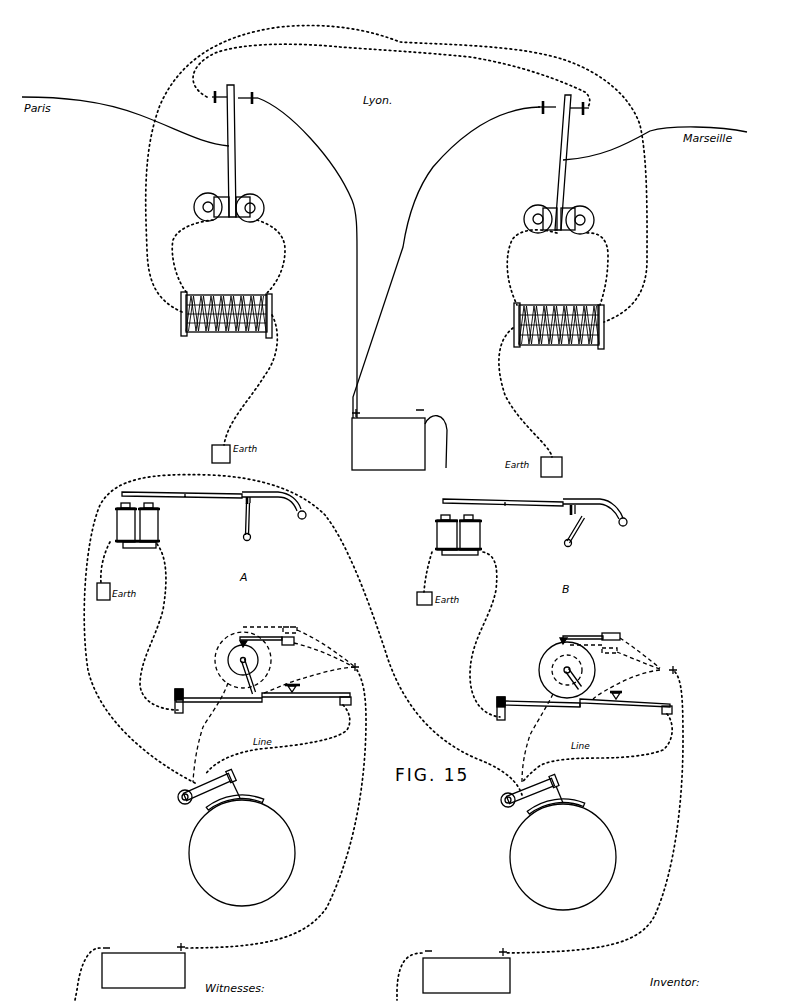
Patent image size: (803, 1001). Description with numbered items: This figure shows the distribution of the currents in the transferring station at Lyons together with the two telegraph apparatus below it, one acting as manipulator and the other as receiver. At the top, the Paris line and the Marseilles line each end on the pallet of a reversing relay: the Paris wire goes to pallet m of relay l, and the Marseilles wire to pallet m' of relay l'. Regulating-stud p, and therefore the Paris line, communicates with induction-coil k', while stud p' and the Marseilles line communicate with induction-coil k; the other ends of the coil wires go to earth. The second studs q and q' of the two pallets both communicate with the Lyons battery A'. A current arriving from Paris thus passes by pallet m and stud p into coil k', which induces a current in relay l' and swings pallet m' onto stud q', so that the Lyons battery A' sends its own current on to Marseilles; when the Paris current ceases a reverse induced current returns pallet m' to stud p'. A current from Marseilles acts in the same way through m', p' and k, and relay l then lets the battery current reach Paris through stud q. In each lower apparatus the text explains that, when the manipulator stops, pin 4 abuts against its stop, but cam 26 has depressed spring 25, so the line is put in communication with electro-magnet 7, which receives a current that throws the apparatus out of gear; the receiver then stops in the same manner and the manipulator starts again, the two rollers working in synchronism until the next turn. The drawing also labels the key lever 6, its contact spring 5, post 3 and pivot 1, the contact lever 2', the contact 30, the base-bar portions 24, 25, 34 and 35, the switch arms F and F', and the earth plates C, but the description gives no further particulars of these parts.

The regulating-stud p is at (214, 104).
The regulating-stud q is at (248, 106).
The pallet m is at (238, 151).
The reversing relay l is at (229, 201).
The induction-coil k is at (226, 309).
The regulating-stud p' is at (579, 115).
The regulating-stud q' is at (545, 116).
The pallet m' is at (553, 162).
The reversing relay l' is at (559, 212).
The induction-coil k' is at (559, 319).
The Lyons battery A' is at (399, 439).
The key lever 6 is at (342, 493).
The contact spring 5 is at (434, 502).
The post 3 is at (403, 508).
The pin 4 is at (418, 525).
The pivot 1 is at (415, 505).
The electro-magnet 7 is at (298, 529).
The contact lever 2' is at (444, 641).
The cam 26 is at (405, 665).
The contact 30 is at (460, 690).
The base bar 24 is at (218, 702).
The spring 25 is at (306, 702).
The base bar 34 is at (538, 708).
The base bar 35 is at (626, 708).
The switch arm F is at (209, 786).
The switch arm F' is at (532, 790).
The earth plate C is at (402, 852).